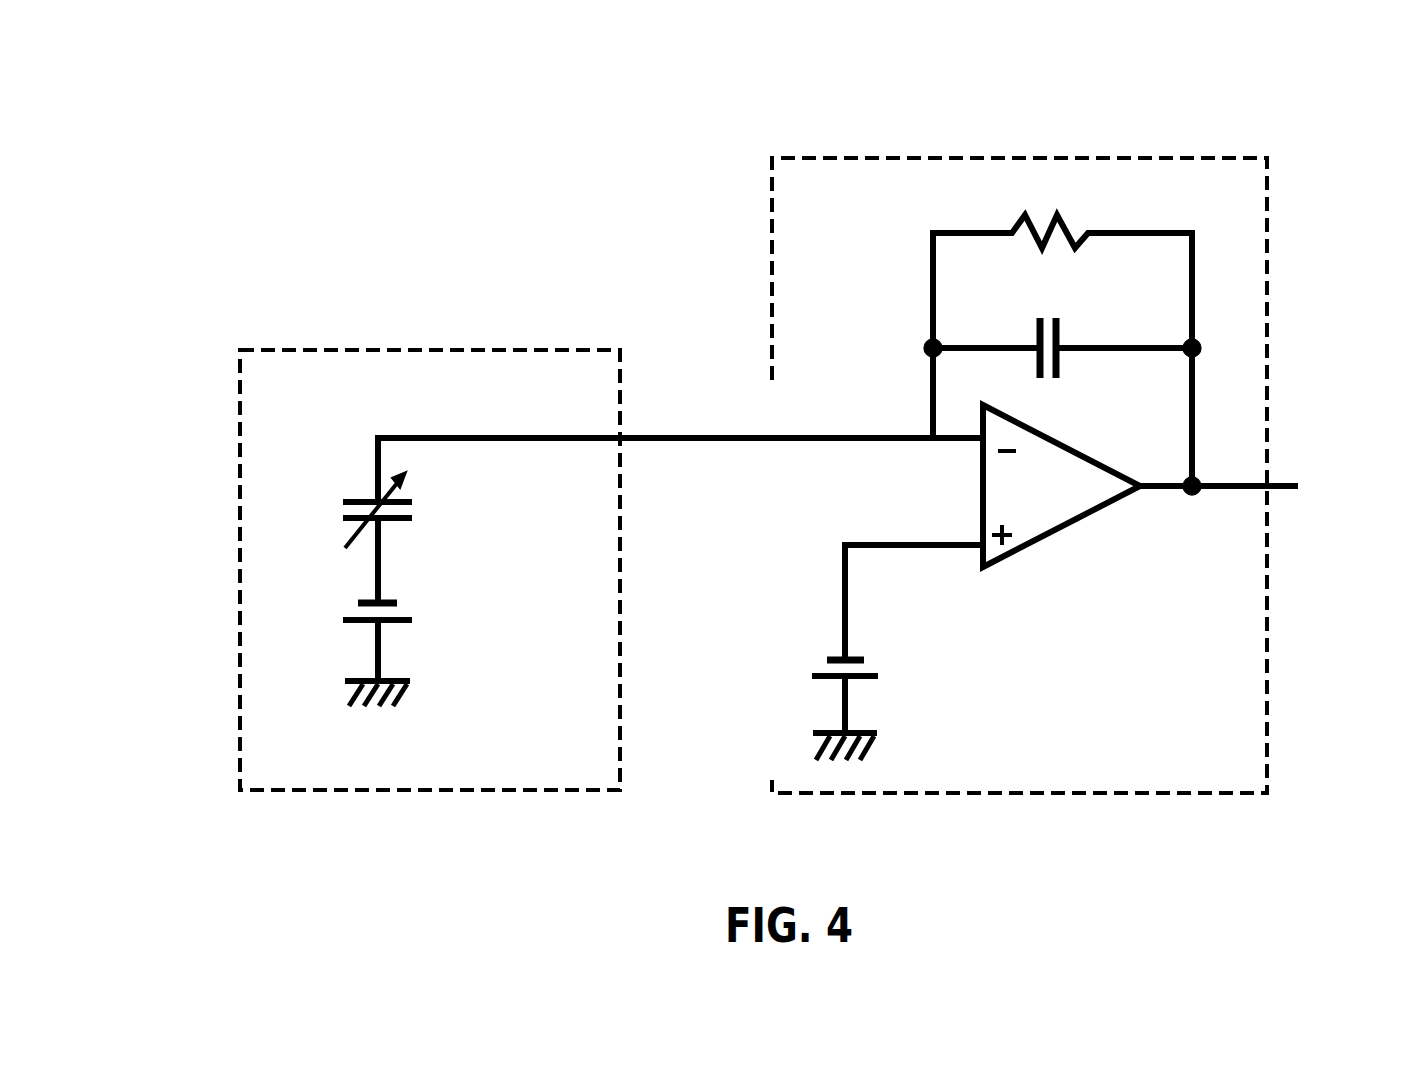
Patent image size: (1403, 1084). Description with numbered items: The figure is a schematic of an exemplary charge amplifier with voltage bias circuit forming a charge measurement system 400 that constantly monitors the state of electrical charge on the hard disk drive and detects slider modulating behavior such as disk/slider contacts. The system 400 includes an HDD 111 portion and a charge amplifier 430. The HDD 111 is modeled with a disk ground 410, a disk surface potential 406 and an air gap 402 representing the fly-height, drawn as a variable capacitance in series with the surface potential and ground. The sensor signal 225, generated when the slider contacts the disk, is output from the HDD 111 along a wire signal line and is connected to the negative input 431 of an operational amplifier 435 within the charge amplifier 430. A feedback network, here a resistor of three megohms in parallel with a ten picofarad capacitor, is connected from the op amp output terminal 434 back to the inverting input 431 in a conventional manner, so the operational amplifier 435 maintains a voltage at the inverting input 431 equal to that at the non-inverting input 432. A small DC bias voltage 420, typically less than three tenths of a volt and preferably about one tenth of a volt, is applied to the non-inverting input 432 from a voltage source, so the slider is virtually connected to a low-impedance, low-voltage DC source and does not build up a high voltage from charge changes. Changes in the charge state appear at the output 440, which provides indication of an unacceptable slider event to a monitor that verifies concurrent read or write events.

The charge measurement system 400 is at (737, 139).
The HDD 111 is at (430, 594).
The sensor signal 225 is at (678, 417).
The air gap 402 is at (605, 530).
The disk surface potential 406 is at (522, 663).
The disk ground 410 is at (583, 765).
The charge amplifier 430 is at (1059, 498).
The negative input 431 is at (960, 492).
The non-inverting input 432 is at (960, 592).
The output terminal 434 is at (1172, 455).
The operational amplifier 435 is at (1065, 502).
The bias voltage 420 is at (1165, 722).
The output 440 is at (1243, 487).